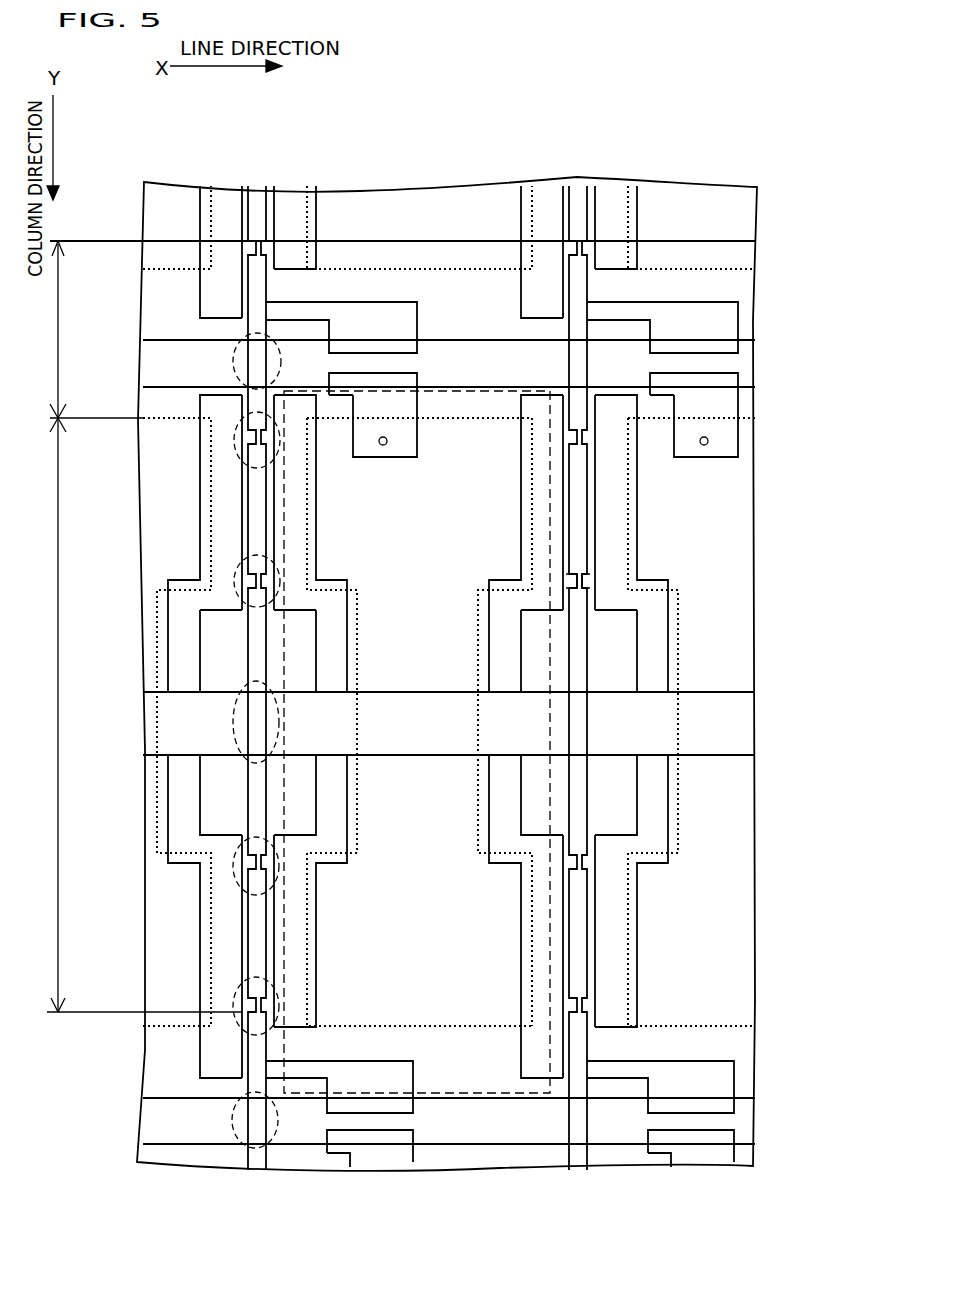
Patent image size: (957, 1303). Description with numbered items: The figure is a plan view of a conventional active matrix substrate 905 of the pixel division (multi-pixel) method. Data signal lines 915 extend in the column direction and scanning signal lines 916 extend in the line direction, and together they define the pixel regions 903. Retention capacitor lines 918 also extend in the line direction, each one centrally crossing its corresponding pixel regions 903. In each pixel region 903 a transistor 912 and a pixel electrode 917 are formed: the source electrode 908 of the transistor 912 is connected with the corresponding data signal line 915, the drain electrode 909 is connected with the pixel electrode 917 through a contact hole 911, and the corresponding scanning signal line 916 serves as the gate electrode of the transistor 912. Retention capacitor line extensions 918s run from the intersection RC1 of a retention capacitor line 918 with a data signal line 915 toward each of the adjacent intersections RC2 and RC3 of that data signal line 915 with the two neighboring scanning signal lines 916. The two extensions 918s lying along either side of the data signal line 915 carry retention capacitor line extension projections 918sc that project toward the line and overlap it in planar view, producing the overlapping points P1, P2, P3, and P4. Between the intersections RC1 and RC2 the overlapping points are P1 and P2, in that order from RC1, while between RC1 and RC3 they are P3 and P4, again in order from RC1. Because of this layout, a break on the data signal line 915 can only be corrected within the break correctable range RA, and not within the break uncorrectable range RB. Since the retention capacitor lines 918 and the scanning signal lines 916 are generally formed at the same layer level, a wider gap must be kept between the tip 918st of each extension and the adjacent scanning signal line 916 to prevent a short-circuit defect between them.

The active matrix substrate 905 is at (748, 120).
The source electrode 908 is at (708, 317).
The transistor 912 is at (698, 355).
The scanning signal line 916 is at (720, 365).
The pixel electrode 917 is at (708, 413).
The drain electrode 909 is at (737, 438).
The contact hole 911 is at (705, 447).
The retention capacitor line 918 is at (738, 723).
The retention capacitor line extension 918s is at (618, 542).
The retention capacitor line extension projection 918sc is at (592, 582).
The tip of retention capacitor line extension 918st is at (616, 395).
The data signal line 915 is at (577, 937).
The pixel region 903 is at (465, 1093).
The break correctable range RA is at (136, 708).
The break uncorrectable range RB is at (48, 626).
The intersection of retention capacitor line and data signal line RC1 is at (243, 722).
The intersection of data signal line and scanning signal line RC2 is at (243, 365).
The intersection of data signal line and scanning signal line RC3 is at (243, 1122).
The overlapping point P1 is at (243, 581).
The overlapping point P2 is at (243, 438).
The overlapping point P3 is at (243, 865).
The overlapping point P4 is at (243, 1005).